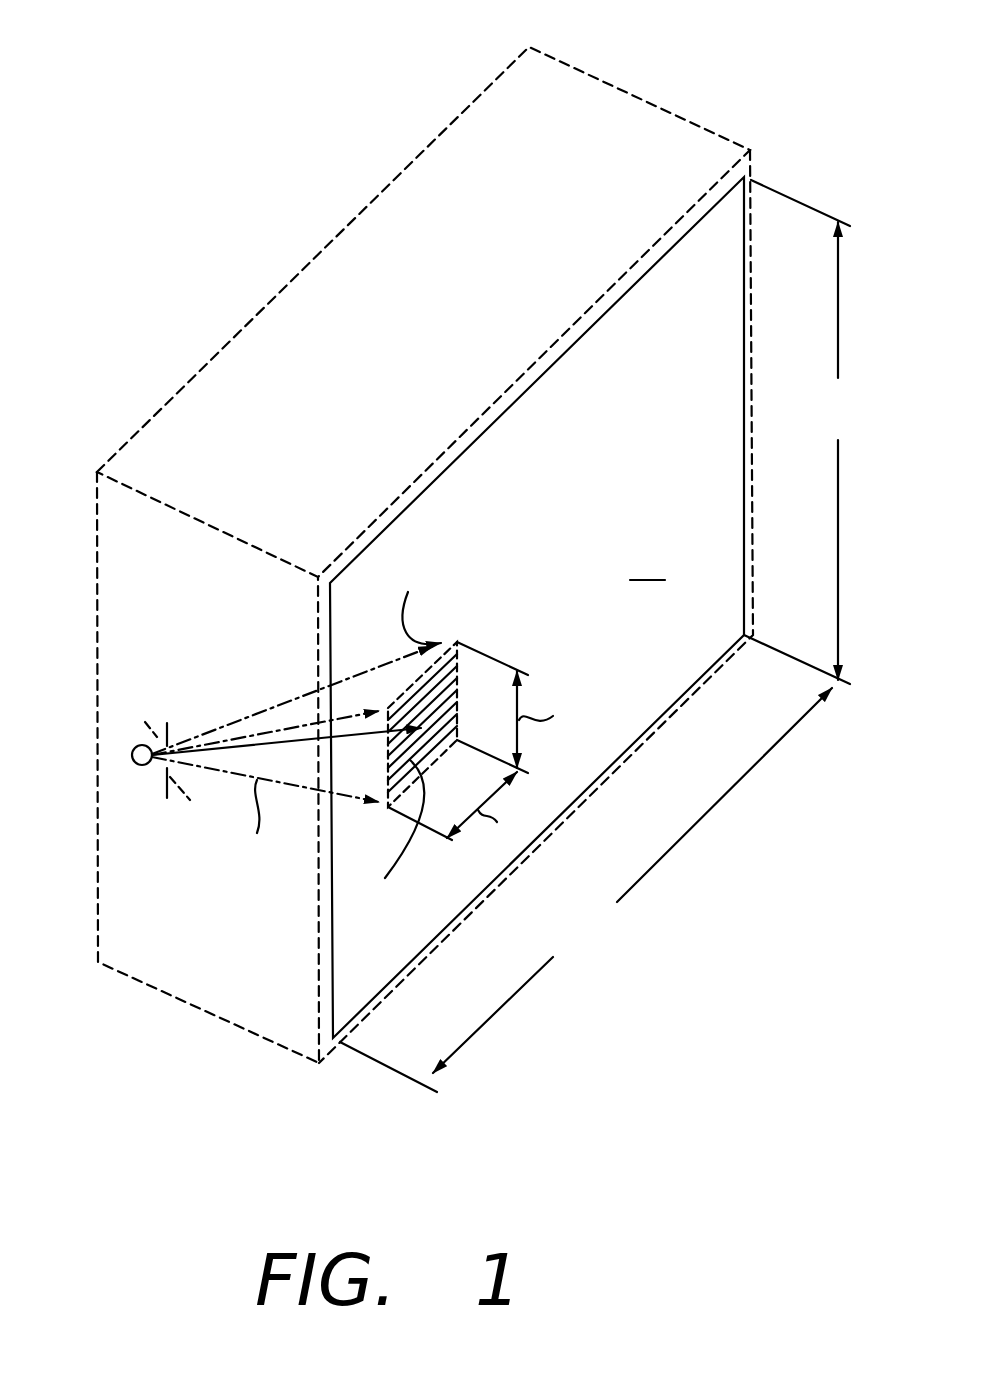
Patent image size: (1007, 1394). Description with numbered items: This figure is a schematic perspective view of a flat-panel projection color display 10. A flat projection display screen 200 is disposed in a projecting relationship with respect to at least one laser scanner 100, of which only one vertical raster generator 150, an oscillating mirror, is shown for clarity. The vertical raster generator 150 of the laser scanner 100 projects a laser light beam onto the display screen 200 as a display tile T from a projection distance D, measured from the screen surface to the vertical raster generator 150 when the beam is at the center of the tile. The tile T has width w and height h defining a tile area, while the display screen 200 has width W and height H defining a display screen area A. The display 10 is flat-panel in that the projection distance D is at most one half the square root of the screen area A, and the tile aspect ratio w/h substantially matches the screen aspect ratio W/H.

The flat-panel projection color display 10 is at (240, 254).
The laser scanner 100 is at (650, 103).
The vertical raster generator 150 is at (167, 727).
The display screen 200 is at (688, 428).